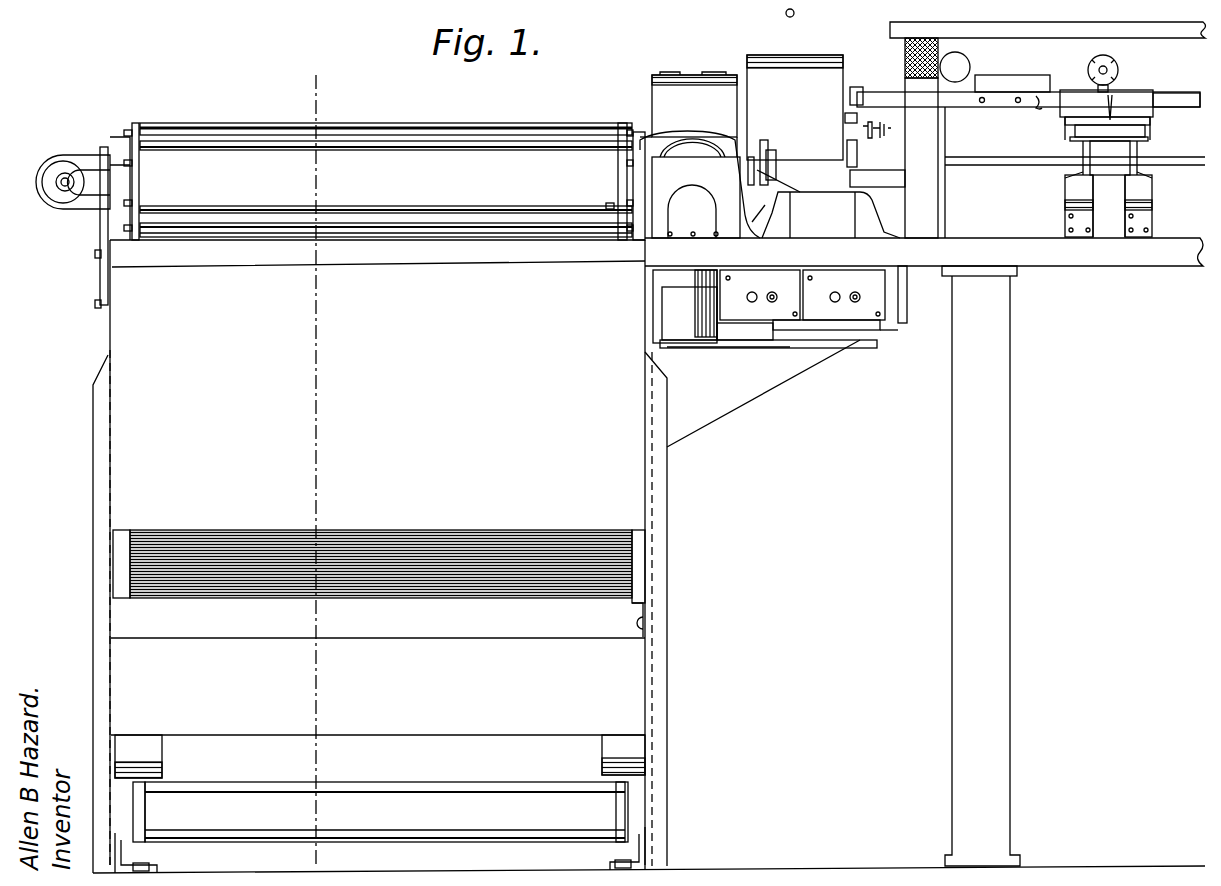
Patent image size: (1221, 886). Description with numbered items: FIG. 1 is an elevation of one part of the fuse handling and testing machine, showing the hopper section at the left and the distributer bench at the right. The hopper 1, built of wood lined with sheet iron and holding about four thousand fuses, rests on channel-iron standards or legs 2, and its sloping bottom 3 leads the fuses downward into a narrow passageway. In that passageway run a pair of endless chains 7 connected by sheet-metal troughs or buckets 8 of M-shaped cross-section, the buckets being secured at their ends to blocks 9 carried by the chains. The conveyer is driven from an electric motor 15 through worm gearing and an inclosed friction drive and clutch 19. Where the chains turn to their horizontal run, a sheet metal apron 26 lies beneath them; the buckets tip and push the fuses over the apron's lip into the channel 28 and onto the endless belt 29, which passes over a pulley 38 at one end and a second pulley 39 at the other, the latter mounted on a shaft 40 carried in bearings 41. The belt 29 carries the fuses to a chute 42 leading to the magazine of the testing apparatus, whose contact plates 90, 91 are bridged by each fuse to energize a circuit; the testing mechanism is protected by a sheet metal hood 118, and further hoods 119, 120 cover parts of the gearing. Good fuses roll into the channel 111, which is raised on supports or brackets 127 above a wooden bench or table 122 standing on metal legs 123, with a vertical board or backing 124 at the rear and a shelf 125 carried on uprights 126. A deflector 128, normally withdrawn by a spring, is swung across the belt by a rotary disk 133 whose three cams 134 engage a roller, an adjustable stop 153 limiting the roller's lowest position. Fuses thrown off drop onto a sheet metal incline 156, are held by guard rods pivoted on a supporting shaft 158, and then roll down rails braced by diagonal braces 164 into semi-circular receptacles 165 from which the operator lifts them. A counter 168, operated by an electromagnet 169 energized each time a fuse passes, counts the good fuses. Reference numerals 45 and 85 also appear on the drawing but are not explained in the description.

The hopper 1 is at (108, 349).
The standards or legs 2 is at (100, 665).
The bottom of the hopper 3 is at (290, 86).
The endless chains 7 is at (130, 123).
The troughs or buckets 8 is at (573, 135).
The blocks 9 is at (612, 202).
The electric motor 15 is at (868, 213).
The friction drive and clutch 19 is at (706, 188).
The sheet metal apron 26 is at (490, 158).
The channel 28 is at (106, 146).
The endless belt 29 is at (78, 152).
The pulley 38 is at (692, 148).
The second pulley 39 is at (56, 200).
The shaft 40 is at (58, 186).
The bearings 41 is at (78, 190).
The chute 42 is at (752, 222).
The brace 45 is at (856, 343).
The bracket 85 is at (907, 299).
The contact plate 90 is at (752, 162).
The contact plate 91 is at (858, 160).
The channel 111 is at (878, 95).
The sheet metal hood 118 is at (805, 84).
The hood 119 is at (694, 78).
The hood 120 is at (696, 197).
The bench or table 122 is at (1070, 262).
The metal legs 123 is at (1000, 432).
The vertical board or backing 124 is at (1075, 147).
The shelf 125 is at (1184, 28).
The uprights 126 is at (932, 185).
The supports or brackets 127 is at (940, 215).
The deflector 128 is at (1150, 88).
The rotary disk 133 is at (1118, 70).
The projections or cams 134 is at (1112, 60).
The adjustable stop 153 is at (1032, 106).
The sheet metal incline 156 is at (1084, 141).
The supporting shaft 158 is at (1150, 131).
The diagonal braces 164 is at (1068, 178).
The semi-circular receptacles 165 is at (1070, 205).
The counter 168 is at (966, 74).
The electromagnet 169 is at (905, 64).